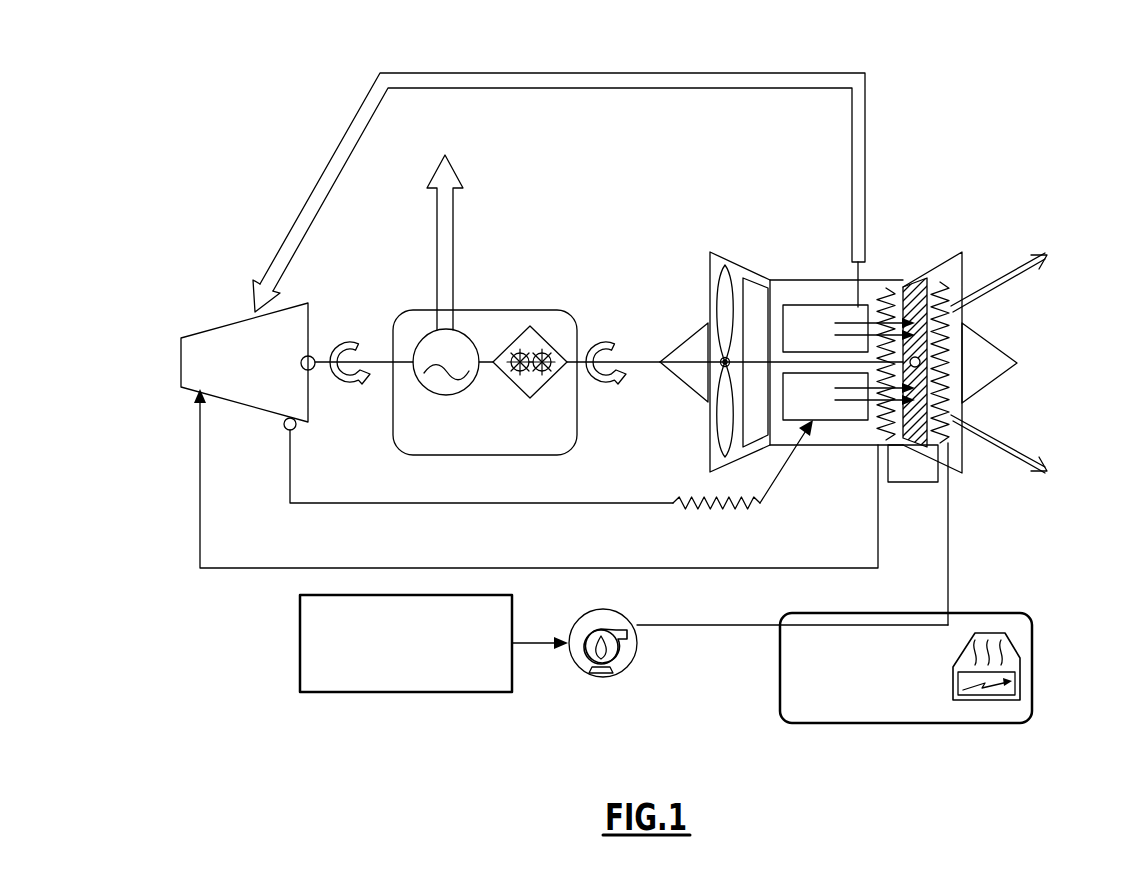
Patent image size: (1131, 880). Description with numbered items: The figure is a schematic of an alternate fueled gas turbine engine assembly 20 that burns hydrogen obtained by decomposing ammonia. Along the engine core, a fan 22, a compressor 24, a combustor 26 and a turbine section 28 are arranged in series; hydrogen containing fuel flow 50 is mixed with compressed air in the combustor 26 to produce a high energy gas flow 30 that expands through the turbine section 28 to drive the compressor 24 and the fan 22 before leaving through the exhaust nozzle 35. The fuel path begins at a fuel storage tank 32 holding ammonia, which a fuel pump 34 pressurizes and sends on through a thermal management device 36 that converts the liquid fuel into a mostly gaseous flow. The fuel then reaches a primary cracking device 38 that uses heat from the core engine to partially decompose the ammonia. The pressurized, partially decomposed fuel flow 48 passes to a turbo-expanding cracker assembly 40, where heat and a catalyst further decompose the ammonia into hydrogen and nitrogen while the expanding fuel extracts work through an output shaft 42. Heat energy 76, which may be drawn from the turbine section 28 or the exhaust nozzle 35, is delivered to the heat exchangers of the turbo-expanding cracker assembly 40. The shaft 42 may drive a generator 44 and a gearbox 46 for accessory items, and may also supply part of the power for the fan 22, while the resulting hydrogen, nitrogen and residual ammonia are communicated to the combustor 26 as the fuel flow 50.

The turbine engine assembly 20 is at (621, 382).
The fan 22 is at (730, 277).
The compressor 24 is at (755, 290).
The combustor 26 is at (807, 307).
The turbine section 28 is at (915, 287).
The high energy gas flow 30 is at (1002, 258).
The fuel storage tank 32 is at (427, 680).
The fuel pump 34 is at (580, 665).
The exhaust nozzle 35 is at (945, 282).
The thermal management device 36 is at (792, 670).
The primary cracking device 38 is at (880, 396).
The turbo-expanding cracker assembly 40 is at (208, 308).
The output shaft 42 is at (330, 355).
The generator 44 is at (475, 338).
The gearbox 46 is at (540, 340).
The fuel flow 48 is at (542, 568).
The hydrogen containing fuel flow 50 is at (567, 503).
The heat energy 76 is at (777, 82).